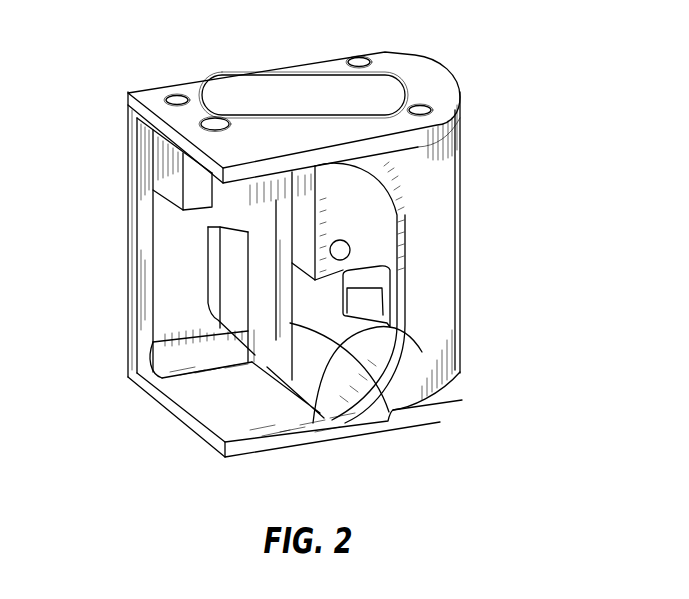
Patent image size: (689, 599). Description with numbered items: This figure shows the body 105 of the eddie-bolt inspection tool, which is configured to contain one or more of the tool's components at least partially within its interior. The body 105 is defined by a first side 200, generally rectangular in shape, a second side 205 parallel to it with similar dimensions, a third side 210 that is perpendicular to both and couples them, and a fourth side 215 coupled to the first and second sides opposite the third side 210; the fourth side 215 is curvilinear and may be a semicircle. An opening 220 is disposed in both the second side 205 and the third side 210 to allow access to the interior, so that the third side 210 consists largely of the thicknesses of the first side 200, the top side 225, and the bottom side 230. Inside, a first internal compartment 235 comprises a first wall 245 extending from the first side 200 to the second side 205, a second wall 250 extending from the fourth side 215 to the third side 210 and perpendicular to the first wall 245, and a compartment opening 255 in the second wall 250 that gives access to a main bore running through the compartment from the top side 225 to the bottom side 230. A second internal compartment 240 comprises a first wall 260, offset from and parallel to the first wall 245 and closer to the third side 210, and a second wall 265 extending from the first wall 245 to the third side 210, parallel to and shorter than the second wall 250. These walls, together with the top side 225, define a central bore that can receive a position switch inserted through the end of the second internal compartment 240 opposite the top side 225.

The body 105 is at (478, 250).
The first side 200 is at (224, 75).
The second side 205 is at (440, 367).
The third side 210 is at (132, 262).
The fourth side 215 is at (452, 76).
The opening 220 is at (246, 422).
The top side 225 is at (257, 132).
The bottom side 230 is at (173, 407).
The first internal compartment 235 is at (368, 195).
The second internal compartment 240 is at (258, 332).
The first wall 245 is at (300, 243).
The second wall 250 is at (380, 222).
The compartment opening 255 is at (368, 294).
The first wall 260 is at (227, 280).
The second wall 265 is at (380, 393).